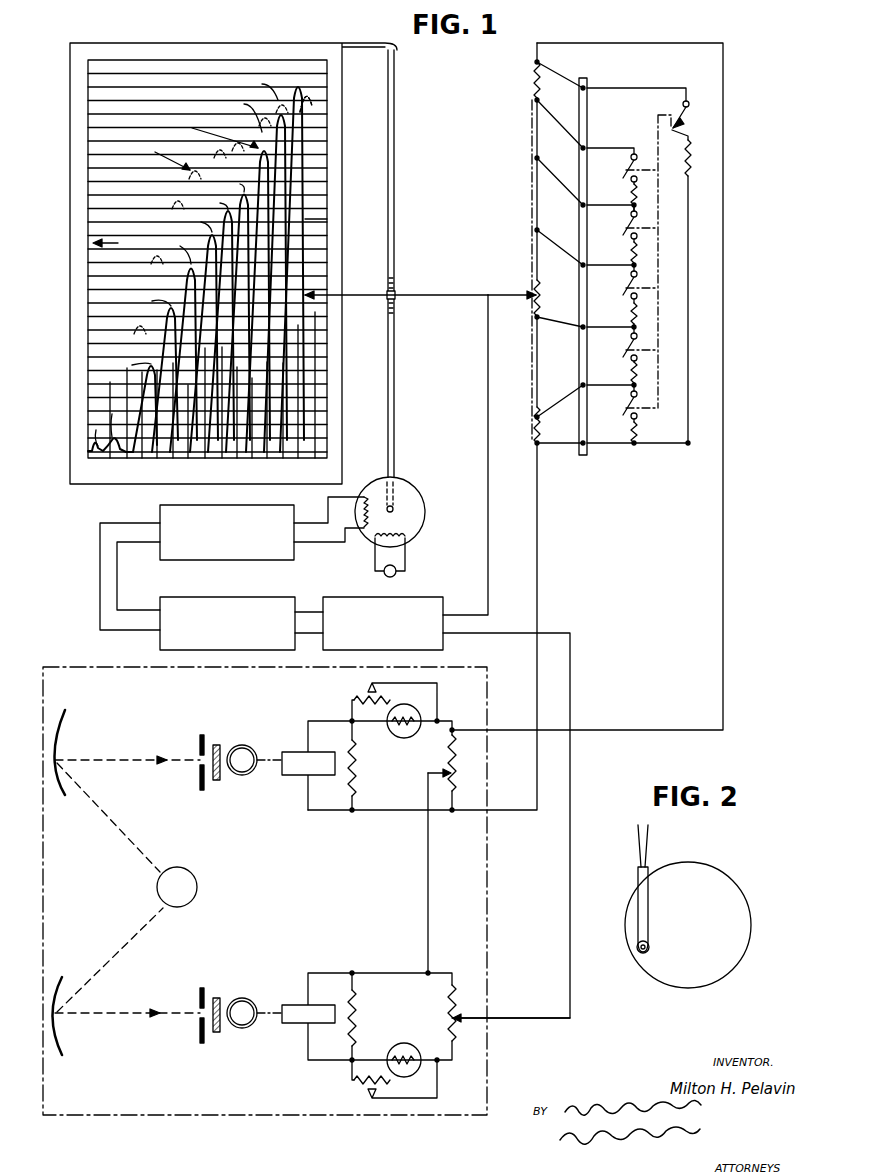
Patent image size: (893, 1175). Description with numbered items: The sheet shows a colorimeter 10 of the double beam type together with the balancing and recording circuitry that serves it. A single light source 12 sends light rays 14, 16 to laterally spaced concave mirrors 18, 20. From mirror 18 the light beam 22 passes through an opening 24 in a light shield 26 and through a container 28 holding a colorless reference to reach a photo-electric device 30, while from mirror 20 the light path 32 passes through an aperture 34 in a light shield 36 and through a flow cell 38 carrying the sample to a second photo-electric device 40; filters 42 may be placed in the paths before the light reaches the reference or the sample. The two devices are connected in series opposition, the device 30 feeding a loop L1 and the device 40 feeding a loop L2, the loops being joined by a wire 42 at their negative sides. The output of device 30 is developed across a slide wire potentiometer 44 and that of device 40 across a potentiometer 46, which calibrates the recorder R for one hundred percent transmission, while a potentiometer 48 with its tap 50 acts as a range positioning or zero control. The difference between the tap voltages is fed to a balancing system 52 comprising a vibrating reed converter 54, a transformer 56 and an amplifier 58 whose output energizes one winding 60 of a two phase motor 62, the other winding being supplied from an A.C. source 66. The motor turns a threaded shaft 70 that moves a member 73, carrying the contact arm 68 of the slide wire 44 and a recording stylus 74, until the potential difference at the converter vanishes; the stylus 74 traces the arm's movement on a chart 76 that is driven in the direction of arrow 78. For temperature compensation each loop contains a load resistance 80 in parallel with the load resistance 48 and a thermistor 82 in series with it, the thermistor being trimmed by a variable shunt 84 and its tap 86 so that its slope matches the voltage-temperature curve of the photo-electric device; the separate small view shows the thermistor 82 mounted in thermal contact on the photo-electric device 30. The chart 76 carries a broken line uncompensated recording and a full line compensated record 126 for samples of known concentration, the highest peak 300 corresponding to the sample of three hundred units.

In FIG. 1, the colorimeter 10 is at (313, 1116).
In FIG. 1, the light source 12 is at (197, 885).
In FIG. 1, the light rays 14 is at (118, 824).
In FIG. 1, the light rays 16 is at (118, 946).
In FIG. 1, the concave mirror 18 is at (60, 730).
In FIG. 1, the concave mirror 20 is at (62, 1047).
In FIG. 1, the light beam 22 is at (118, 760).
In FIG. 1, the opening 24 is at (200, 762).
In FIG. 1, the light shield 26 is at (205, 735).
In FIG. 1, the container 28 is at (248, 749).
In FIG. 1, the photo-electric device 30 is at (283, 771).
In FIG. 2, the photo-electric device 30 is at (729, 884).
In FIG. 1, the light path 32 is at (105, 1018).
In FIG. 1, the aperture 34 is at (200, 1006).
In FIG. 1, the light shield 36 is at (200, 1040).
In FIG. 1, the flow cell 38 is at (243, 1031).
In FIG. 1, the photo-electric device 40 is at (286, 1005).
In FIG. 1, the filter 42 is at (219, 782).
In FIG. 1, the slide wire potentiometer 44 is at (530, 207).
In FIG. 1, the potentiometer 46 is at (450, 1016).
In FIG. 1, the potentiometer 48 is at (456, 766).
In FIG. 1, the tap 50 is at (434, 770).
In FIG. 1, the balancing system 52 is at (260, 598).
In FIG. 1, the converter stage 54 is at (422, 601).
In FIG. 1, the transformer 56 is at (200, 597).
In FIG. 1, the amplifier stage 58 is at (160, 508).
In FIG. 1, the winding 60 is at (372, 497).
In FIG. 1, the two phase motor 62 is at (419, 484).
In FIG. 1, the A.C. source 66 is at (383, 577).
In FIG. 1, the contact arm 68 is at (506, 294).
In FIG. 1, the threaded shaft 70 is at (395, 378).
In FIG. 1, the member 73 is at (394, 299).
In FIG. 1, the recording stylus 74 is at (322, 295).
In FIG. 1, the chart 76 is at (165, 80).
In FIG. 1, the arrow 78 is at (116, 243).
In FIG. 1, the load resistance 80 is at (358, 778).
In FIG. 1, the thermistor 82 is at (398, 738).
In FIG. 2, the thermistor 82 is at (636, 876).
In FIG. 1, the variable shunt 84 is at (372, 700).
In FIG. 1, the tap 86 is at (382, 688).
In FIG. 1, the record 126 is at (306, 220).
In FIG. 1, the curve 300 is at (308, 99).
In FIG. 1, the loop L1 is at (320, 720).
In FIG. 1, the loop L2 is at (318, 1062).
In FIG. 1, the recorder R is at (236, 43).